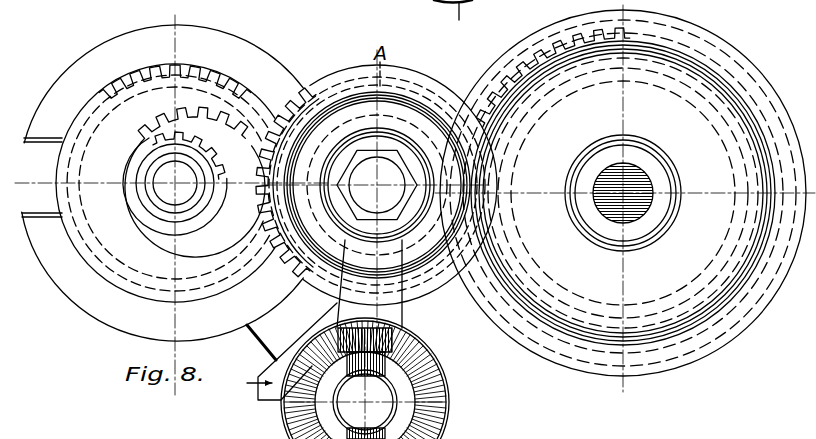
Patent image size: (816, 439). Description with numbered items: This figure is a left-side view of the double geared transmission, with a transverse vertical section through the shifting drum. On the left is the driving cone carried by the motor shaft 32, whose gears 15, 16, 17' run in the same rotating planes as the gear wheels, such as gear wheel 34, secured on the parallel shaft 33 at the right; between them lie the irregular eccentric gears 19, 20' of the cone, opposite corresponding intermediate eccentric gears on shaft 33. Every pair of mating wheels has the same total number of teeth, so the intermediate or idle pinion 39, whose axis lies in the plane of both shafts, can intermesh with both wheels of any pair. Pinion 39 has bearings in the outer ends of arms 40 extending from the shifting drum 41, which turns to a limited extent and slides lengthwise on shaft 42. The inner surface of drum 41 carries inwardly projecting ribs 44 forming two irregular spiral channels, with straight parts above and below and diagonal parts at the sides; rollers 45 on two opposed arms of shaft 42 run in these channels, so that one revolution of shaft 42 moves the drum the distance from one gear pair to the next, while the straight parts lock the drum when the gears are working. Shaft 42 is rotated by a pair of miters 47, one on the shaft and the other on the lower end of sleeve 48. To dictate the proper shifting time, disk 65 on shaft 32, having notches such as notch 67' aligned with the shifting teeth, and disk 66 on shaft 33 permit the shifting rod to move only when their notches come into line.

The gear of the driving cone 15 is at (175, 183).
The gear of the driving cone 16 is at (195, 177).
The gear of the driving cone 17' is at (175, 70).
The irregular eccentric gear 19 is at (260, 140).
The irregular eccentric gear 20' is at (168, 183).
The motor shaft 32 is at (175, 183).
The shaft 33 is at (623, 193).
The gear wheel 34 is at (623, 186).
The intermediate or idle pinion 39 is at (377, 185).
The arms 40 is at (369, 284).
The shifting drum 41 is at (440, 380).
The shaft 42 is at (365, 402).
The inwardly projecting ribs 44 is at (304, 405).
The rollers 45 is at (368, 338).
The miters 47 is at (246, 383).
The sleeve 48 is at (292, 351).
The disk 65 is at (163, 183).
The disk 66 is at (678, 78).
The notch 67' is at (42, 177).